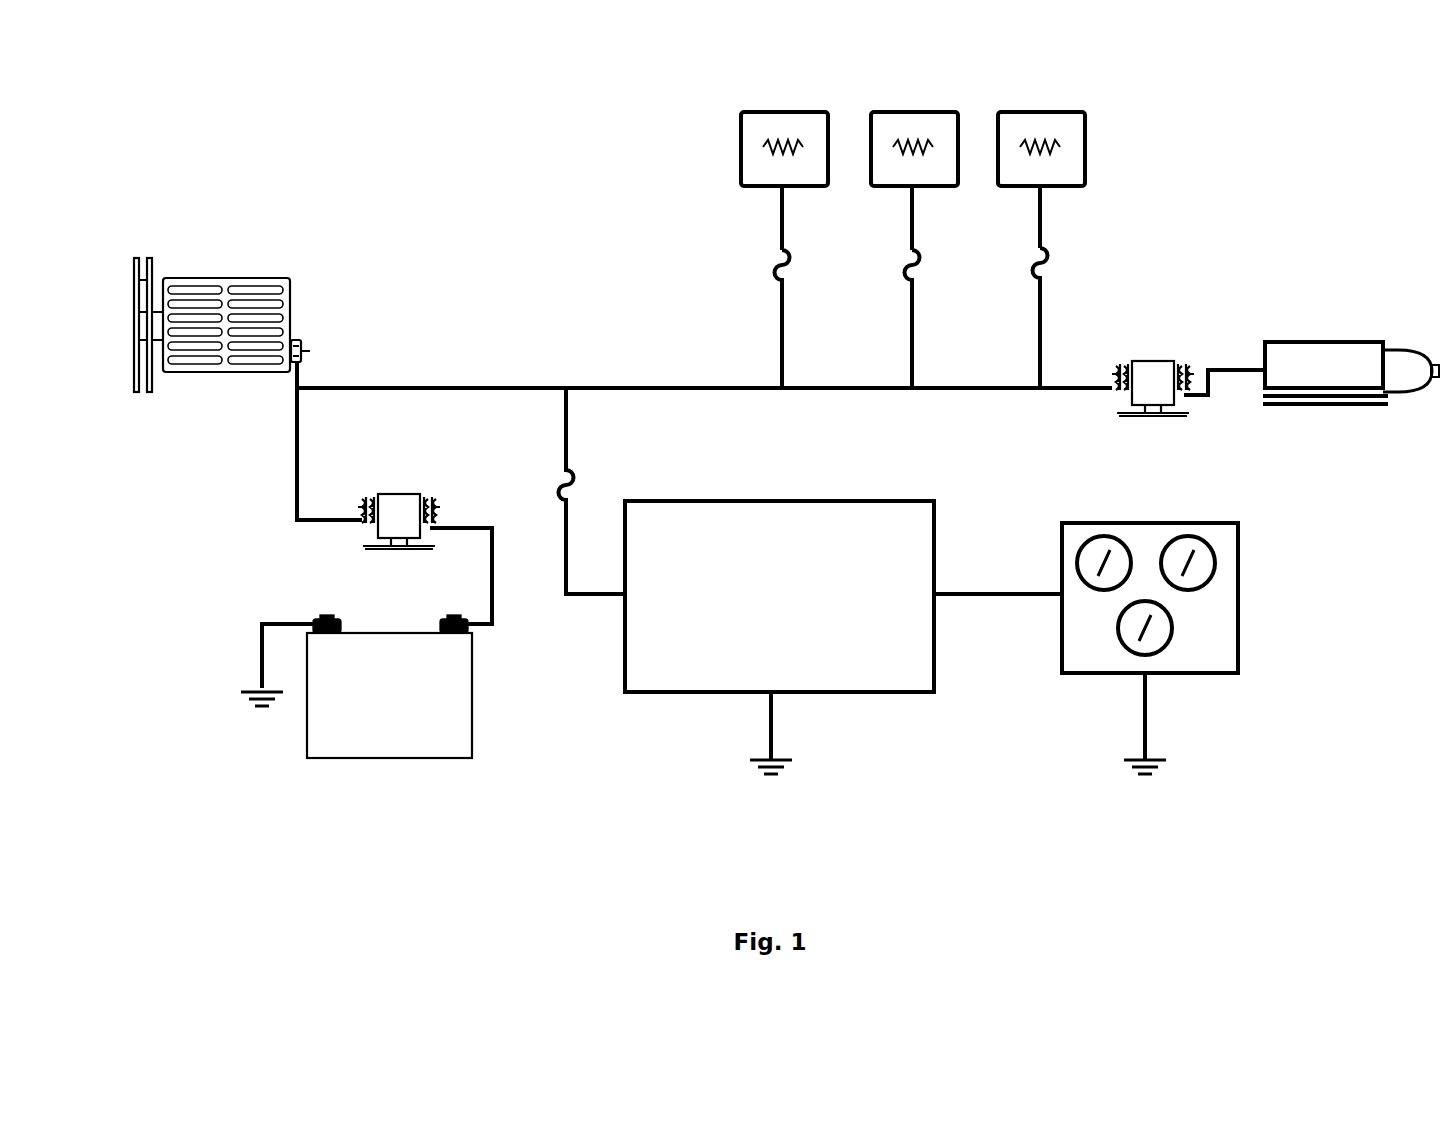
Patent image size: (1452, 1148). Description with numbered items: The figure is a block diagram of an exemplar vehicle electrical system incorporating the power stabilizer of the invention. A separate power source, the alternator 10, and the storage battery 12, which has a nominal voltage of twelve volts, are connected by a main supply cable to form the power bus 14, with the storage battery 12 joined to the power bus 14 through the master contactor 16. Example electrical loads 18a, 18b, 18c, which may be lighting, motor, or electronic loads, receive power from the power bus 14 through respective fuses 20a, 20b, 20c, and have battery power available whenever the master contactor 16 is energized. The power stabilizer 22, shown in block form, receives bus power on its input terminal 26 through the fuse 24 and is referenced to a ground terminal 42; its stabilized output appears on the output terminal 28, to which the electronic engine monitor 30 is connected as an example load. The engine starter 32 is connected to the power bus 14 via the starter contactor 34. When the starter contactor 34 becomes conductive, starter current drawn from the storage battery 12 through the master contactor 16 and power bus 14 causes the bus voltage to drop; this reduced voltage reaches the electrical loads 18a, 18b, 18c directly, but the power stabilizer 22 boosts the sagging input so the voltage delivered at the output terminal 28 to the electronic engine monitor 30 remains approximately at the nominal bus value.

The alternator 10 is at (232, 278).
The storage battery 12 is at (312, 762).
The power bus 14 is at (430, 385).
The master contactor 16 is at (410, 494).
The electrical load 18a is at (786, 110).
The electrical load 18b is at (915, 110).
The electrical load 18c is at (1040, 110).
The fuse 20a is at (772, 274).
The fuse 20b is at (902, 274).
The fuse 20c is at (1034, 272).
The power stabilizer 22 is at (748, 500).
The fuse 24 is at (558, 490).
The input terminal 26 is at (618, 603).
The output terminal 28 is at (940, 600).
The electronic engine monitor 30 is at (1115, 684).
The engine starter 32 is at (1328, 340).
The starter contactor 34 is at (1158, 360).
The ground terminal 42 is at (762, 728).